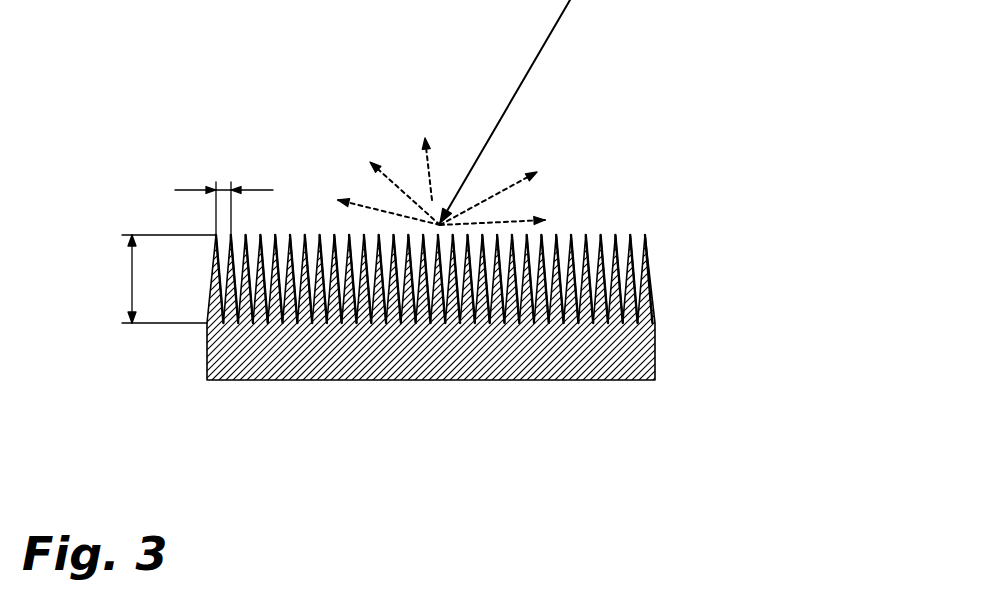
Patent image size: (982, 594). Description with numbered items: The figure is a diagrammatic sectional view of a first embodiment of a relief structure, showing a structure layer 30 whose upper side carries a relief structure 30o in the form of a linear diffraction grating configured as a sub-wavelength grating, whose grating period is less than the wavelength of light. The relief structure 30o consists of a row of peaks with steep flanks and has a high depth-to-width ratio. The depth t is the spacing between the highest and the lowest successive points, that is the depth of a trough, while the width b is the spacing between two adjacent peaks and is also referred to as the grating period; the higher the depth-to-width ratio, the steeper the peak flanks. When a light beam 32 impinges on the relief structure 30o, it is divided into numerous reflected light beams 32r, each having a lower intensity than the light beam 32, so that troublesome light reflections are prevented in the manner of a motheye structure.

The structure layer 30 is at (630, 353).
The relief structure 30o is at (607, 237).
The light beam 32 is at (545, 50).
The reflected light beams 32r is at (430, 177).
The width b is at (222, 186).
The depth t is at (129, 284).